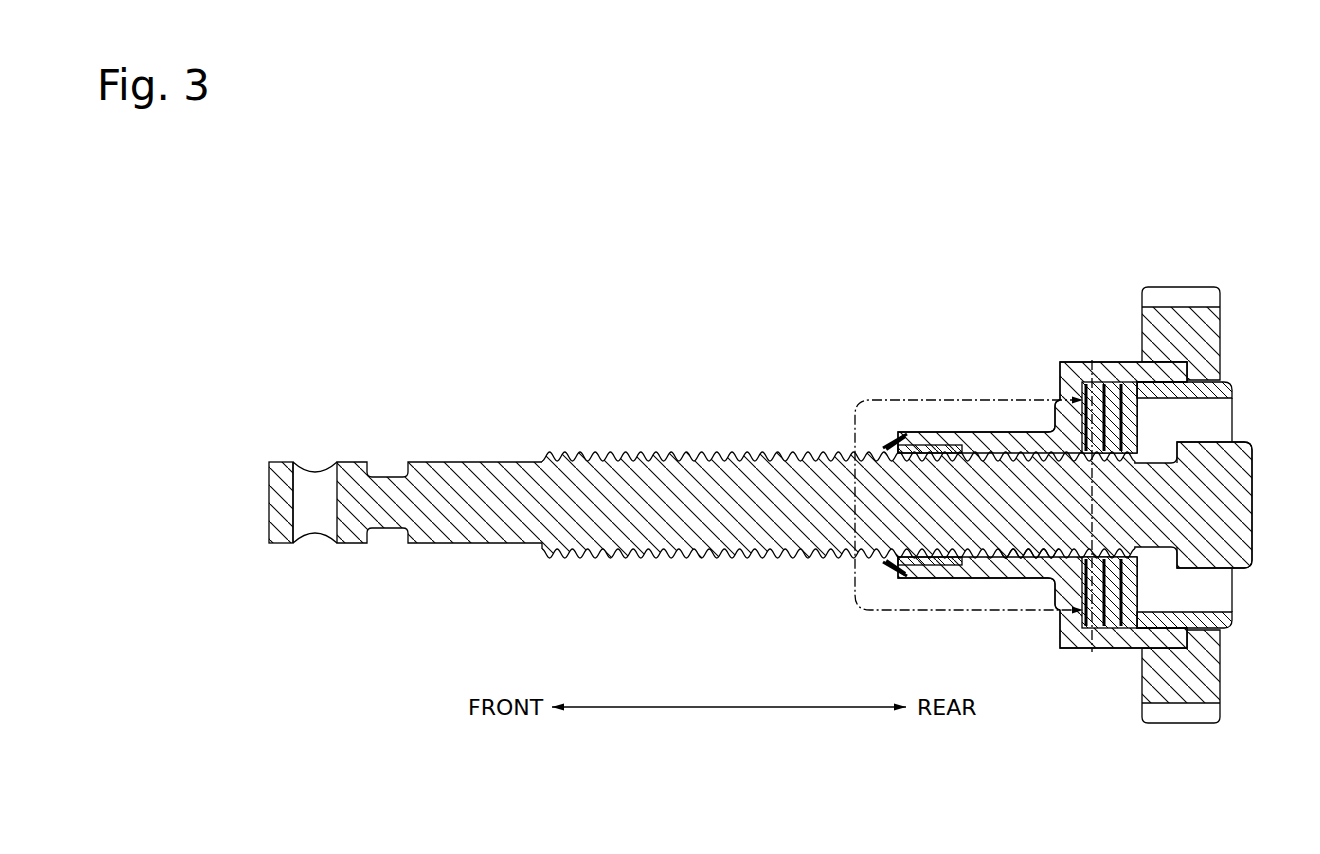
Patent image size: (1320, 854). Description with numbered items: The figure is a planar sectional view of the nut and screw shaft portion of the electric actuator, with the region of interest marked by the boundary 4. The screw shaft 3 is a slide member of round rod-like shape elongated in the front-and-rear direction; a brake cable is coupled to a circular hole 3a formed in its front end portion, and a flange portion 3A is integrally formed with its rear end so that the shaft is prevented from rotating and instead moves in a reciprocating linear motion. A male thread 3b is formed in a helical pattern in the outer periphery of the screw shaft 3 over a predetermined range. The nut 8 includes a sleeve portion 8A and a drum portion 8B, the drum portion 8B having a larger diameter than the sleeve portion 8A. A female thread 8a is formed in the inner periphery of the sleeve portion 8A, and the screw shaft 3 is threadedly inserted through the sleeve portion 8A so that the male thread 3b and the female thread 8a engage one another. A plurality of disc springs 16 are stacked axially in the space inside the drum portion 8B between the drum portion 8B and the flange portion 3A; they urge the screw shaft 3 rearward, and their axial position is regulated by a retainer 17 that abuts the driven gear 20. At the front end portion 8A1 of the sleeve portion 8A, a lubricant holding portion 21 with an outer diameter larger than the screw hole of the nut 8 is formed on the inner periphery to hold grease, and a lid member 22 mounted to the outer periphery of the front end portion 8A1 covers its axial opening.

The screw shaft 3 is at (492, 549).
The circular hole 3a is at (300, 469).
The male thread 3b is at (780, 455).
The flange portion 3A is at (1238, 442).
The nut assembly region 4 is at (920, 381).
The nut 8 is at (997, 586).
The sleeve portion 8A is at (997, 420).
The one end portion of the sleeve portion 8A1 is at (908, 432).
The drum portion 8B is at (1098, 362).
The female thread 8a is at (1045, 548).
The disc springs 16 is at (1110, 628).
The retainer 17 is at (1180, 398).
The driven gear 20 is at (1197, 297).
The lubricant holding portion 21 is at (945, 568).
The lid member 22 is at (905, 578).